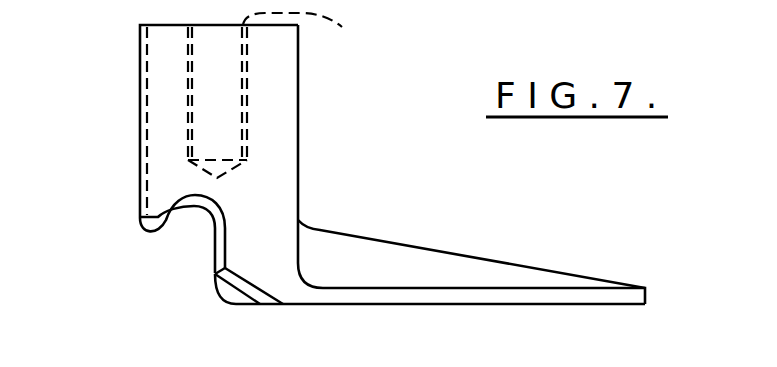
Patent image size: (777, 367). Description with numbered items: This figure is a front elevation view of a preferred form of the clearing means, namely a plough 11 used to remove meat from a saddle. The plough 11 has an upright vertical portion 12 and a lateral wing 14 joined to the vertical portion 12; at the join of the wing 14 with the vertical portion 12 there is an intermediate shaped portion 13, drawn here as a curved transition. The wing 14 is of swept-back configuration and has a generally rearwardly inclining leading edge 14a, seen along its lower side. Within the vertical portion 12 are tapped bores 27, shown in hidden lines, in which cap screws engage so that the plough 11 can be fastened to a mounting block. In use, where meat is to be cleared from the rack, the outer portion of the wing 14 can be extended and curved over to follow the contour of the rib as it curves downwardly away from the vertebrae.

The plough 11 is at (117, 58).
The vertical portion 12 is at (292, 88).
The intermediate shaped portion 13 is at (193, 225).
The lateral wing 14 is at (565, 275).
The leading edge 14a is at (540, 306).
The tapped bores 27 is at (265, 113).